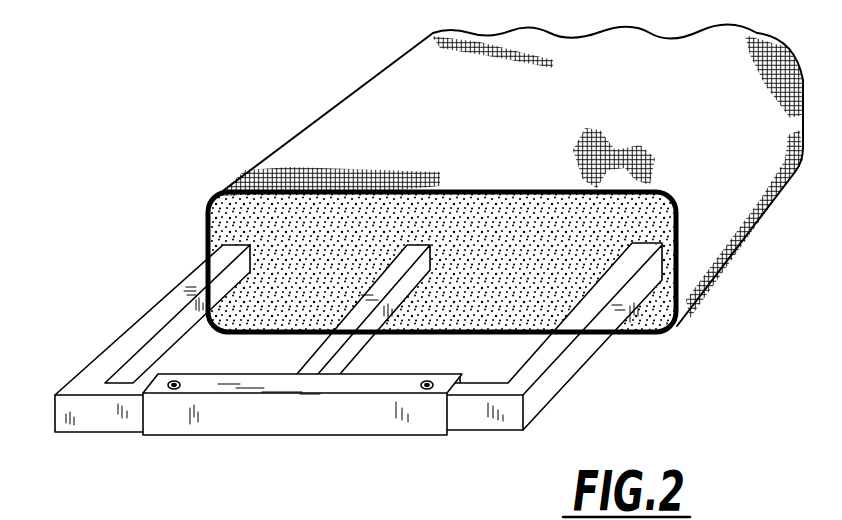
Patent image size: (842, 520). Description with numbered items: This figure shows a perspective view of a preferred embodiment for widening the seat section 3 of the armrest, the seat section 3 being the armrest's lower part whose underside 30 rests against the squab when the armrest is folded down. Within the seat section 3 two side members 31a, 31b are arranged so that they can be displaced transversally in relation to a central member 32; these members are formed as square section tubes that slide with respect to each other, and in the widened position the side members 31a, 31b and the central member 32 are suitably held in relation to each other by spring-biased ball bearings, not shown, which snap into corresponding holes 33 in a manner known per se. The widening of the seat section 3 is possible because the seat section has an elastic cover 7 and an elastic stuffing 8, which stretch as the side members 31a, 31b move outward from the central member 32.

The seat section 3 is at (429, 266).
The elastic cover 7 is at (315, 147).
The elastic stuffing 8 is at (208, 213).
The armrest's underside 30 is at (359, 376).
The side member 31a is at (102, 422).
The side member 31b is at (477, 420).
The central member 32 is at (297, 423).
The fastening hole 33 is at (427, 390).